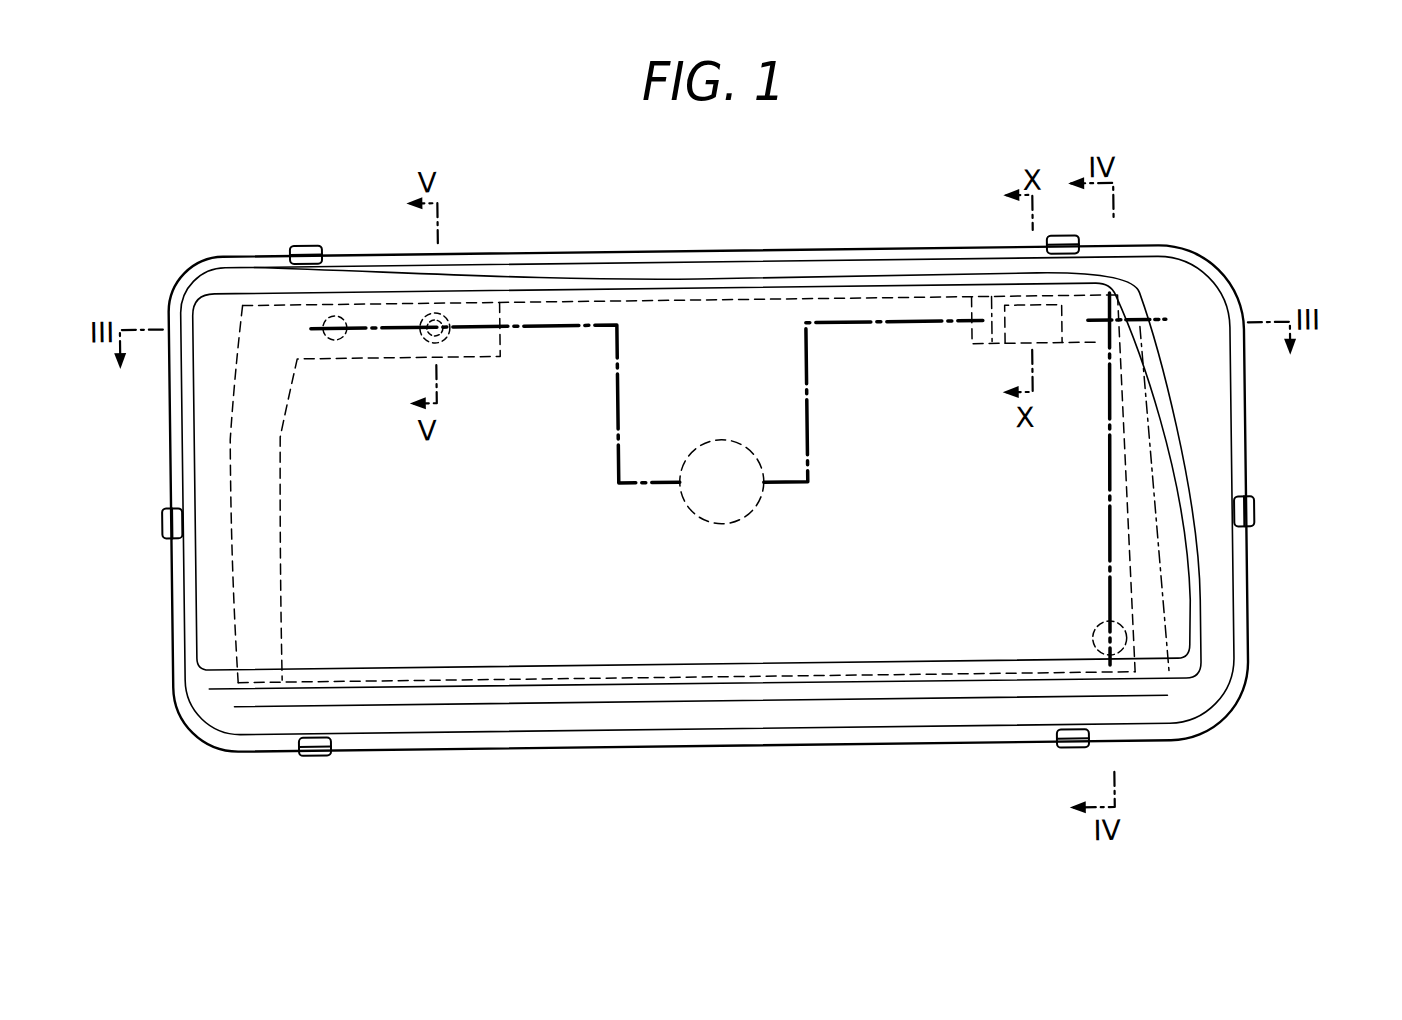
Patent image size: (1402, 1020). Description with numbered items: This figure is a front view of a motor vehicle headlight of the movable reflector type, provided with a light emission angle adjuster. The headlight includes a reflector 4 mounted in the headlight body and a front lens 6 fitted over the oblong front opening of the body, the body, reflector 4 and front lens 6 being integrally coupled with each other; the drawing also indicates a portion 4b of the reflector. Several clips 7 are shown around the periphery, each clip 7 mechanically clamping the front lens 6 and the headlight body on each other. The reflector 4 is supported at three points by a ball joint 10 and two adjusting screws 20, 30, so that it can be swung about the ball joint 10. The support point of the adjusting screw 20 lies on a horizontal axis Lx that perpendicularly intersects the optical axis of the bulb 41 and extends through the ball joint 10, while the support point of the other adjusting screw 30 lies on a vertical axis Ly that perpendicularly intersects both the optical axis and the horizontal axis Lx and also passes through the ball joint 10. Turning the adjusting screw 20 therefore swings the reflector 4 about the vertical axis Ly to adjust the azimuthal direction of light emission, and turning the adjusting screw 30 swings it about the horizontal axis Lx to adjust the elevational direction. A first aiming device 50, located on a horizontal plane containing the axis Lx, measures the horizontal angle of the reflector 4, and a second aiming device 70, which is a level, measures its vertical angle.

The reflector 4 is at (908, 297).
The lamp body rim 4b is at (982, 290).
The front lens 6 is at (696, 625).
The clip 7 is at (308, 240).
The ball joint 10 is at (1128, 313).
The adjusting screw 20 is at (356, 316).
The adjusting screw 30 is at (1145, 645).
The bulb 41 is at (734, 440).
The first aiming device 50 is at (470, 312).
The second aiming device 70 is at (1022, 304).
The horizontal axis Lx is at (662, 323).
The vertical axis Ly is at (1111, 568).